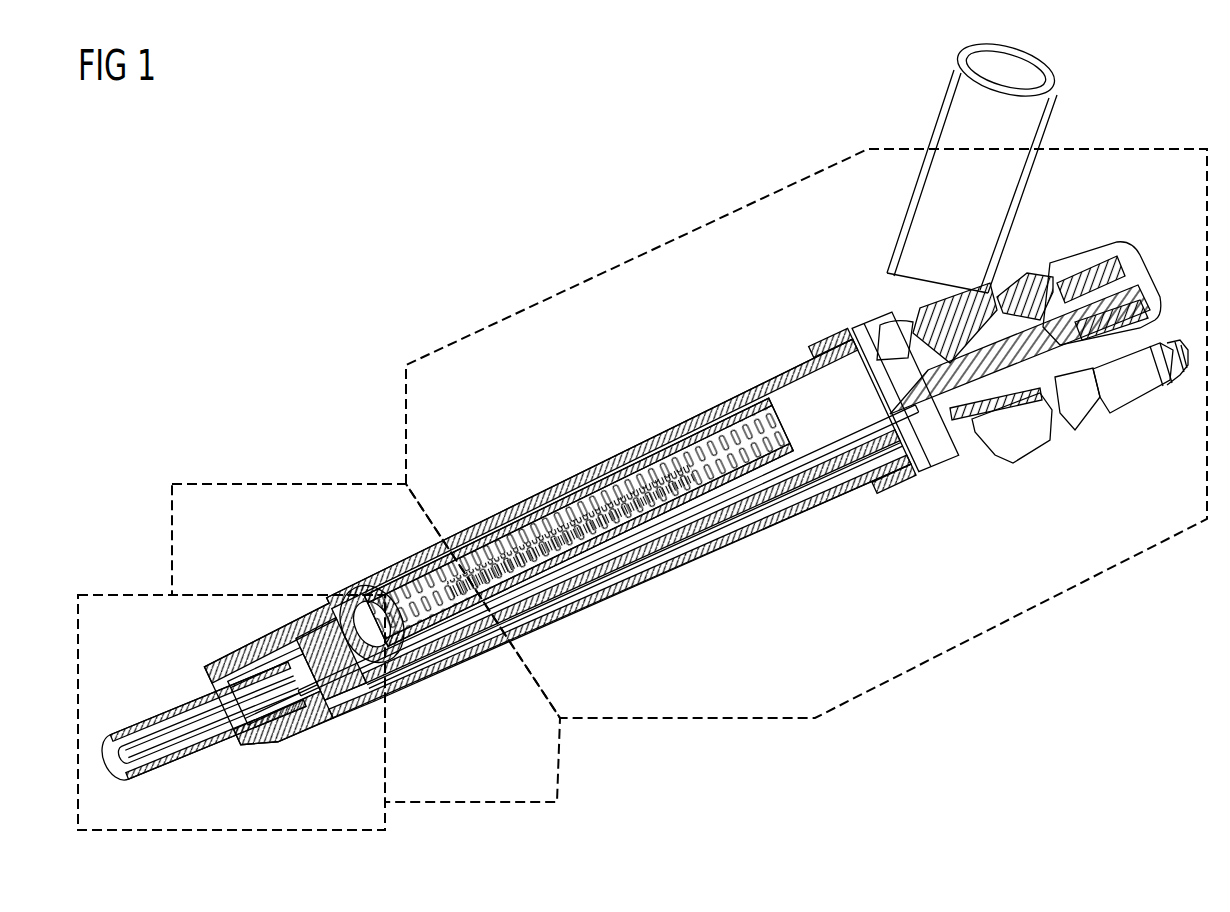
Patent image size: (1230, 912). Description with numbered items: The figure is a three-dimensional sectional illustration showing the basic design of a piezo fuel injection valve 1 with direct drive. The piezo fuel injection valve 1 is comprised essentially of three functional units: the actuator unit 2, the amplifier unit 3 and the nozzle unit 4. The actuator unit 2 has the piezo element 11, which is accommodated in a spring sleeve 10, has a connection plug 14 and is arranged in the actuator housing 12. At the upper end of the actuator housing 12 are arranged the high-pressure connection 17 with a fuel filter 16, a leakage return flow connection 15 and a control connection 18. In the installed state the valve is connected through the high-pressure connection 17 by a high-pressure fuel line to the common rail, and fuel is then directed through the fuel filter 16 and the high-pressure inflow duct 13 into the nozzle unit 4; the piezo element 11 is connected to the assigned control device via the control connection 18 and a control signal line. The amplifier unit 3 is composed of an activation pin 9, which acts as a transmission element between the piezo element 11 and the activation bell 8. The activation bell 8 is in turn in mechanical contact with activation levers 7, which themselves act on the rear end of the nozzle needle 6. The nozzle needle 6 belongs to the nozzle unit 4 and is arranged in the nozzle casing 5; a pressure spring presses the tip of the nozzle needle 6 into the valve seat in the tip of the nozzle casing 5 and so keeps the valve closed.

The piezo fuel injection valve 1 is at (531, 200).
The actuator unit 2 is at (477, 330).
The amplifier unit 3 is at (233, 480).
The nozzle unit 4 is at (100, 593).
The nozzle casing 5 is at (158, 717).
The nozzle needle 6 is at (147, 752).
The activation levers 7 is at (400, 680).
The activation bell 8 is at (387, 572).
The activation pin 9 is at (447, 652).
The spring sleeve 10 is at (562, 613).
The piezo element 11 is at (672, 548).
The actuator housing 12 is at (767, 523).
The high-pressure inflow duct 13 is at (813, 503).
The connection plug 14 is at (894, 468).
The leakage return flow connection 15 is at (1023, 443).
The fuel filter 16 is at (1038, 330).
The high-pressure connection 17 is at (1095, 258).
The control connection 18 is at (1037, 113).